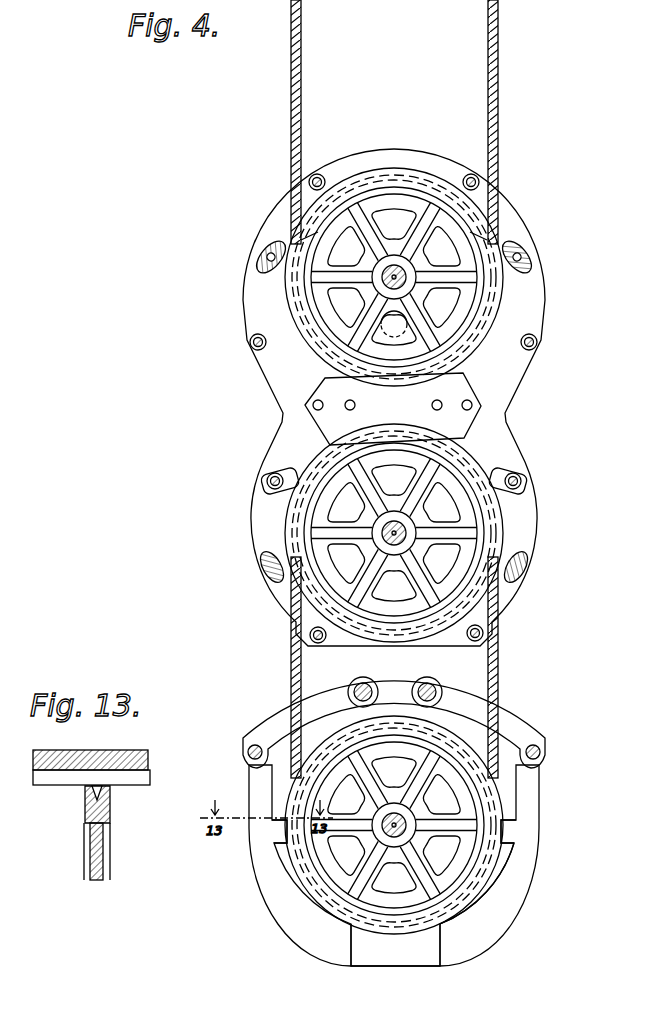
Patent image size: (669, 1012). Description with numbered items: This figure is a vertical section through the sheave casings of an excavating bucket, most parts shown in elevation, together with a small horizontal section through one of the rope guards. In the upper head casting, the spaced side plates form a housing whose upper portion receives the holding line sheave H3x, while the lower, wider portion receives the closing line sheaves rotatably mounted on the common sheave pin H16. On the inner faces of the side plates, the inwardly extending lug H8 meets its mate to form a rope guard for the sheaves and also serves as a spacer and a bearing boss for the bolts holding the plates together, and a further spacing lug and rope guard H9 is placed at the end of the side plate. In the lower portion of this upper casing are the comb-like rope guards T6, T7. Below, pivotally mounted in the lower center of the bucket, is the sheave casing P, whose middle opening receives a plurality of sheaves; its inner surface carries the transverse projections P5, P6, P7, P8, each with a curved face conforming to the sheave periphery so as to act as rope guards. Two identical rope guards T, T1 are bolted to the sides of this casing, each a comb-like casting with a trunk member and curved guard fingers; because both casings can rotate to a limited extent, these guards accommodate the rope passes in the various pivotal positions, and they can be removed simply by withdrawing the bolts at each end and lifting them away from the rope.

The holding line sheave H3x is at (376, 208).
The inwardly extending lug H8 is at (393, 409).
The spacing lug and rope guard H9 is at (262, 479).
The sheave pin H16 is at (406, 528).
The rope guard T7 is at (284, 602).
The rope guard T6 is at (508, 589).
The rope guard T is at (505, 722).
The rope guard T1 is at (280, 720).
The sheave casing P is at (287, 938).
The projection P5 is at (285, 838).
The projection P8 is at (509, 833).
The projection P6 is at (347, 923).
The projection P7 is at (447, 927).